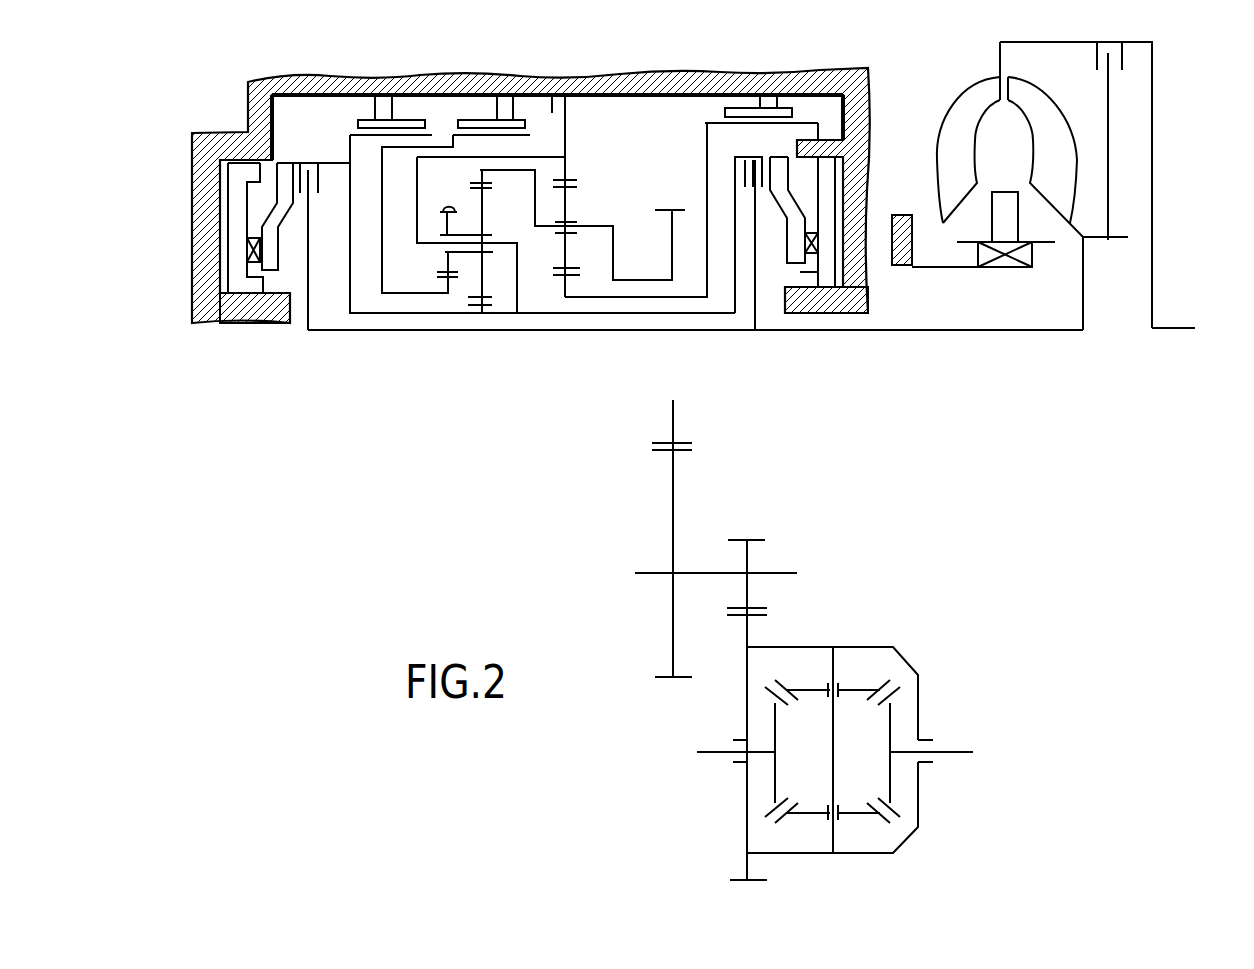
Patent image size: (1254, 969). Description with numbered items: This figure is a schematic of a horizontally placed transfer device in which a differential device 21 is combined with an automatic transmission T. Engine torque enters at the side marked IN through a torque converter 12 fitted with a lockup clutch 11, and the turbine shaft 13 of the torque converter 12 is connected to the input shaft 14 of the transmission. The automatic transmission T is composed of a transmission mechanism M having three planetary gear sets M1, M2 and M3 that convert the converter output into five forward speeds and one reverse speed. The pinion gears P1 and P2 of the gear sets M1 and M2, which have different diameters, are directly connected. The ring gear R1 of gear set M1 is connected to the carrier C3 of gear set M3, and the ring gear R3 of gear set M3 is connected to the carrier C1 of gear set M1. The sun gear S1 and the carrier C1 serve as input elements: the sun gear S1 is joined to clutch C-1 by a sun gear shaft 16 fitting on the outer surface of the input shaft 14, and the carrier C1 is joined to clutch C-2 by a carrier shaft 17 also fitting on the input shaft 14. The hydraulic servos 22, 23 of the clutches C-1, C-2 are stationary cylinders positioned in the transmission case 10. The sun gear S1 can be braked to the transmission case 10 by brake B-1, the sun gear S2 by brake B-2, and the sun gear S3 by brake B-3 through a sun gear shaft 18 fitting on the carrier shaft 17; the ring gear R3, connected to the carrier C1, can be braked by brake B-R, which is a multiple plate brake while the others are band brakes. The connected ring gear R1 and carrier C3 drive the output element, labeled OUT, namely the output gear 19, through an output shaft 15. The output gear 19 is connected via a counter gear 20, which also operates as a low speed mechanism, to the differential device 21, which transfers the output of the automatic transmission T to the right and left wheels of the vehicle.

The transmission case 10 is at (305, 78).
The lock-up clutch 11 is at (1097, 53).
The torque converter 12 is at (975, 82).
The turbine shaft 13 is at (965, 330).
The input shaft 14 is at (735, 330).
The output shaft 15 is at (645, 278).
The sun gear shaft 16 is at (380, 313).
The carrier shaft 17 is at (707, 313).
The sun gear shaft 18 is at (653, 297).
The output gear 19 is at (682, 207).
The counter gear 20 is at (722, 528).
The differential device 21 is at (925, 660).
The hydraulic servo 22 is at (258, 308).
The hydraulic servo 23 is at (830, 300).
The brake B-1 is at (375, 97).
The brake B-2 is at (508, 97).
The brake B-3 is at (770, 97).
The brake B-R is at (577, 102).
The clutch C-1 is at (308, 163).
The clutch C-2 is at (742, 157).
The carrier C1 is at (502, 243).
The carrier C3 is at (587, 223).
The ring gear R1 is at (472, 180).
The ring gear R3 is at (572, 188).
The sun gear S1 is at (492, 303).
The sun gear S2 is at (440, 280).
The sun gear S3 is at (570, 280).
The pinion gear P1 is at (492, 207).
The pinion gear P2 is at (453, 208).
The transmission mechanism M is at (605, 52).
The planetary gear set M1 is at (485, 343).
The planetary gear set M2 is at (447, 343).
The planetary gear set M3 is at (578, 340).
The automatic transmission T is at (868, 52).
The output OUT is at (666, 226).
The input IN is at (1188, 333).